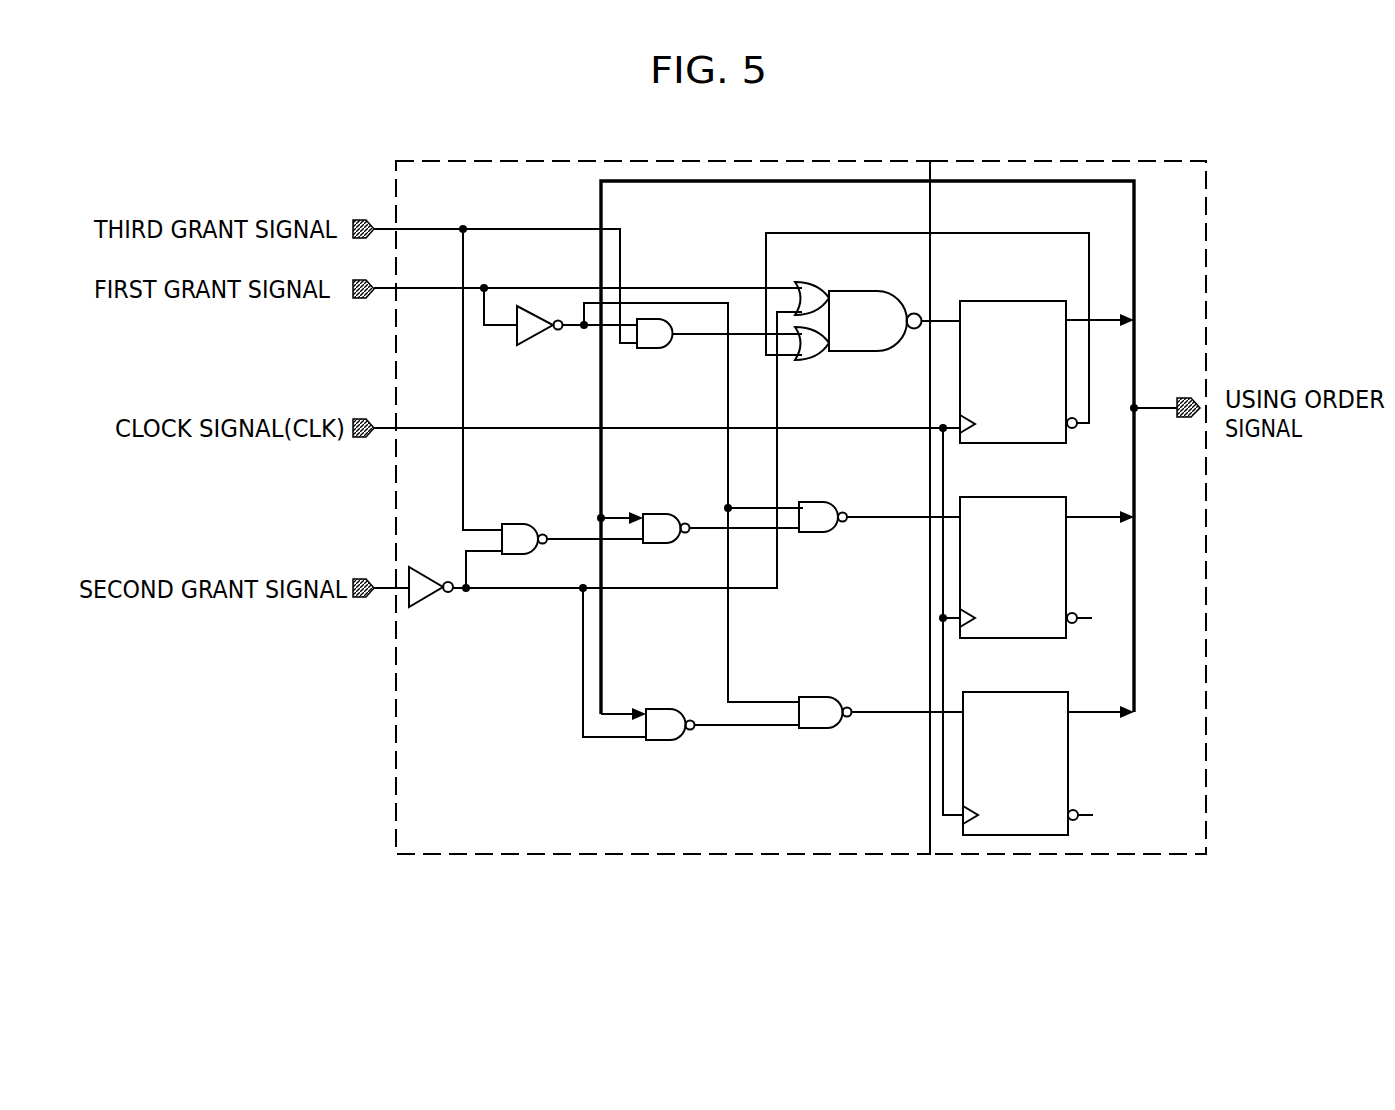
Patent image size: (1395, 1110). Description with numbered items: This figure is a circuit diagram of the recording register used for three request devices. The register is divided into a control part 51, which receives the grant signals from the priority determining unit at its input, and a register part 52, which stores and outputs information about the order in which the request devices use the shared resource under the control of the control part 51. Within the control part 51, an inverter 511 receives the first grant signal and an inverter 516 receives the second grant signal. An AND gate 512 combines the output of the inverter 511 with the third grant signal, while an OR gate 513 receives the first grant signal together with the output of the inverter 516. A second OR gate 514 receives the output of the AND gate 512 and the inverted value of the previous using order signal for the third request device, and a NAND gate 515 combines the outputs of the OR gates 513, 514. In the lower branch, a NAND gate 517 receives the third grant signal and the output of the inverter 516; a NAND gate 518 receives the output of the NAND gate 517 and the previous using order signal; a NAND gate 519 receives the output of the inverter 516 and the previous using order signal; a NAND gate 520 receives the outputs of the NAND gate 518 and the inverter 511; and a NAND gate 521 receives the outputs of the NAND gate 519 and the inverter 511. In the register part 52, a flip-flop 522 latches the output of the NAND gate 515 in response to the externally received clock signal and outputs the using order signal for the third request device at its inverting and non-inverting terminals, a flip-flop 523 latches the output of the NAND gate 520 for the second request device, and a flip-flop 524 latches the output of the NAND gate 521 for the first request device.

The control part 51 is at (690, 162).
The register part 52 is at (1023, 162).
The inverter 511 is at (535, 346).
The AND gate 512 is at (645, 348).
The OR gate 513 is at (807, 264).
The OR gate 514 is at (801, 360).
The NAND gate 515 is at (866, 291).
The inverter 516 is at (428, 600).
The NAND gate 517 is at (507, 524).
The NAND gate 518 is at (658, 496).
The NAND gate 519 is at (659, 691).
The NAND gate 520 is at (832, 484).
The NAND gate 521 is at (832, 679).
The flip-flop 522 is at (995, 301).
The flip-flop 523 is at (997, 497).
The flip-flop 524 is at (1004, 674).